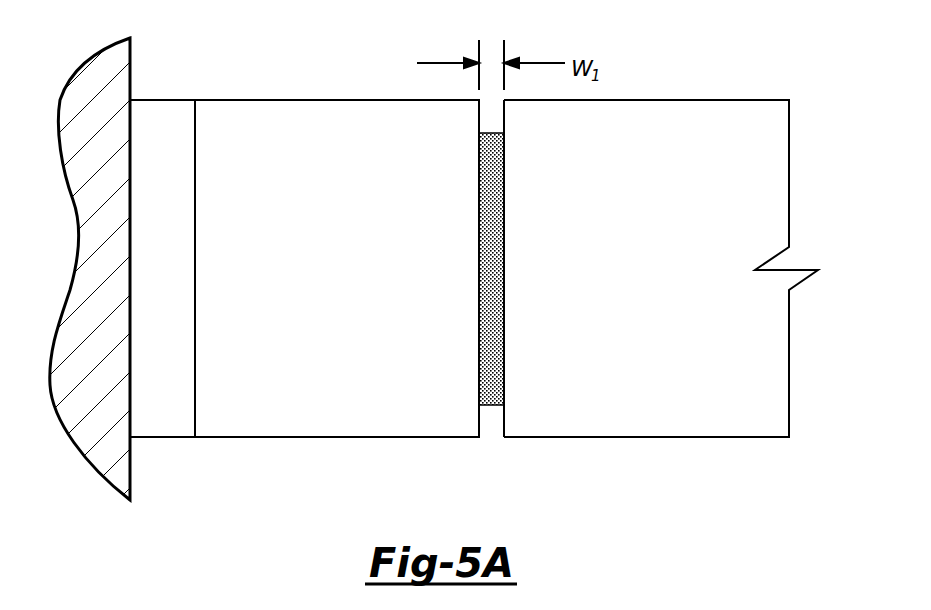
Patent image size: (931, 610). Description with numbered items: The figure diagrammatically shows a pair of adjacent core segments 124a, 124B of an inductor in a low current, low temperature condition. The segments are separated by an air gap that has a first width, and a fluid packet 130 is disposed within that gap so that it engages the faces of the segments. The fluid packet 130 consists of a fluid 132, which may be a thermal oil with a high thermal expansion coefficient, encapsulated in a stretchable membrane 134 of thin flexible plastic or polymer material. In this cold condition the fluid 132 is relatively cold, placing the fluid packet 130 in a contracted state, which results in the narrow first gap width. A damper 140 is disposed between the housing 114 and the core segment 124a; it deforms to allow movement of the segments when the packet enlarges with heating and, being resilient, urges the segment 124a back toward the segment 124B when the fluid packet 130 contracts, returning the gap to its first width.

The housing 114 is at (132, 68).
The core segment 124a is at (350, 287).
The core segment 124B is at (660, 287).
The fluid packet 130 is at (477, 168).
The fluid 132 is at (505, 345).
The membrane 134 is at (505, 203).
The damper 140 is at (165, 172).